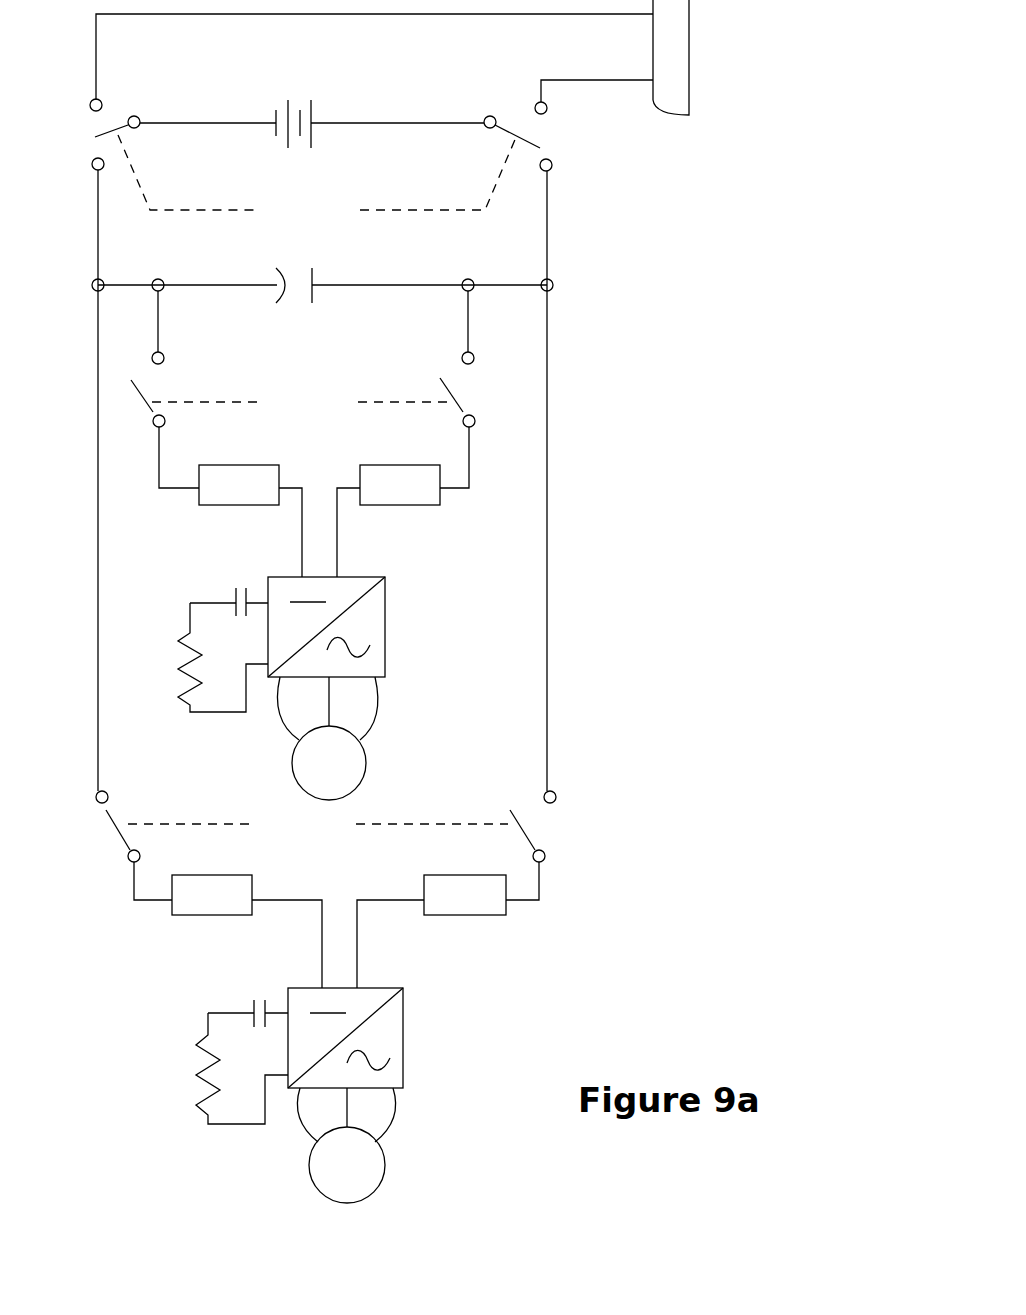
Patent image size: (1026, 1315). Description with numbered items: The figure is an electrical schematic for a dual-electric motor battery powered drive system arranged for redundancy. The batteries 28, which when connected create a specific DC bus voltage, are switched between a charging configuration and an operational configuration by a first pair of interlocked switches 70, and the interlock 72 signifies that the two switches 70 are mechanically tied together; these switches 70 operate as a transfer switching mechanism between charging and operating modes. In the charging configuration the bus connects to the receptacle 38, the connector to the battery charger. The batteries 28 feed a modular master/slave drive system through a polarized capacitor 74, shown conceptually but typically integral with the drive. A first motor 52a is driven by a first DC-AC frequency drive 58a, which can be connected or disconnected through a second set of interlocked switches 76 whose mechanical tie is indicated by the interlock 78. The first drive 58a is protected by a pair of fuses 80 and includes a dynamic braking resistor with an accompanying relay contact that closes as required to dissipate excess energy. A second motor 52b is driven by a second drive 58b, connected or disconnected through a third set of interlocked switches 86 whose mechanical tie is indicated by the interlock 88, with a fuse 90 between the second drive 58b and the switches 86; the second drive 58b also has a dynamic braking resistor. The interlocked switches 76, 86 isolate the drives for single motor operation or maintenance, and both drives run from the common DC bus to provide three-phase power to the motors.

The batteries 28 is at (362, 111).
The receptacle 38 is at (670, 125).
The first pair of interlocked switches 70 is at (99, 127).
The interlock 72 is at (373, 222).
The polarized capacitor 74 is at (303, 264).
The second set of interlocked switches 76 is at (133, 402).
The interlock 78 is at (364, 418).
The pair of fuses 80 is at (206, 512).
The first DC-AC frequency drive 58a is at (493, 627).
The first motor 52a is at (372, 753).
The third set of interlocked switches 86 is at (105, 840).
The interlock 88 is at (362, 826).
The fuse 90 is at (178, 923).
The second drive 58b is at (403, 1033).
The second motor 52b is at (392, 1154).